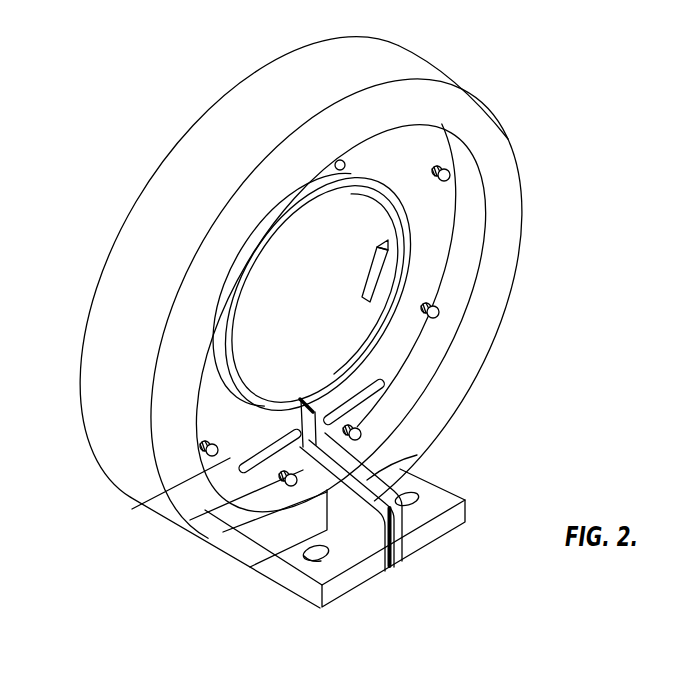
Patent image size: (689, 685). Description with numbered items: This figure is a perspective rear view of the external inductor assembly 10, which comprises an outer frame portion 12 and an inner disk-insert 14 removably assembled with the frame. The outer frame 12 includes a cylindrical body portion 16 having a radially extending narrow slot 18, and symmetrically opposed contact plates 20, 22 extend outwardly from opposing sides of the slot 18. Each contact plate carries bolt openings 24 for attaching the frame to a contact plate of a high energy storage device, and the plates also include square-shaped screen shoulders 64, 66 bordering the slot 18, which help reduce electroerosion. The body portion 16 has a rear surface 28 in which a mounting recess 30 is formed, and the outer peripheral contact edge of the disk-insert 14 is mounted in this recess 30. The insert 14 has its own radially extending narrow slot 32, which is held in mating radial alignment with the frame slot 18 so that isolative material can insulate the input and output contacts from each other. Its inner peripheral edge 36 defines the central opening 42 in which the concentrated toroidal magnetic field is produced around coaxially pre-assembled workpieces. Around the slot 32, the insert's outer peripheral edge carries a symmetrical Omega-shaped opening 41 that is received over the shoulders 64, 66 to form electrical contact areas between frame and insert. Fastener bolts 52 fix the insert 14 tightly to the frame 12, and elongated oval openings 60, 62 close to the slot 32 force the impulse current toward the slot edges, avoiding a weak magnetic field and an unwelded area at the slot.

The external inductor assembly 10 is at (102, 217).
The outer frame portion 12 is at (113, 437).
The inner disk-insert 14 is at (432, 230).
The cylindrical body portion 16 is at (243, 227).
The narrow slot 18 is at (392, 572).
The contact plate 20 is at (442, 497).
The contact plate 22 is at (288, 560).
The bolt openings 24 is at (320, 560).
The rear surface 28 is at (506, 160).
The mounting recess 30 is at (452, 288).
The narrow slot 32 is at (310, 402).
The inner peripheral edge 36 is at (353, 347).
The Omega-shaped opening 41 is at (300, 445).
The central opening 42 is at (361, 212).
The fastener bolts 52 is at (337, 163).
The elongated oval opening 60 is at (376, 393).
The elongated oval opening 62 is at (240, 470).
The screen shoulder 64 is at (417, 455).
The screen shoulder 66 is at (367, 530).